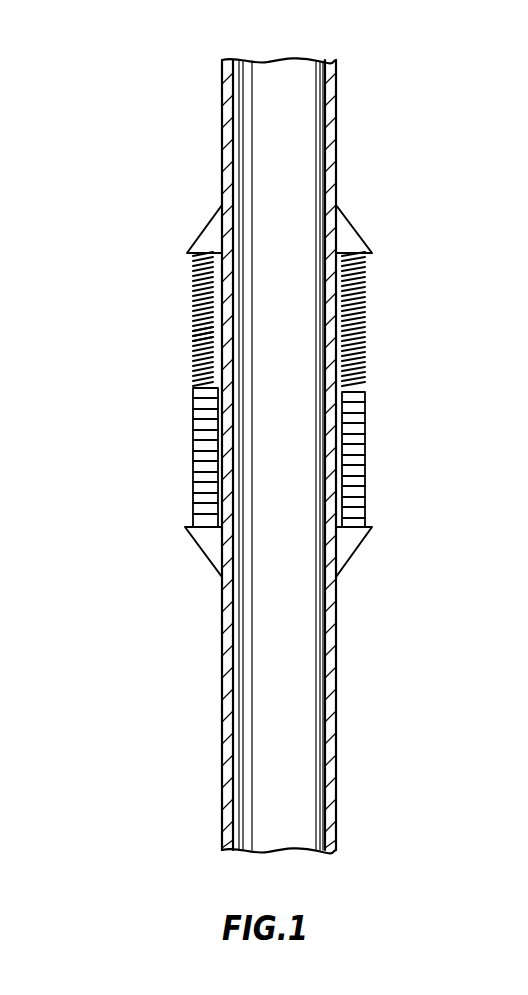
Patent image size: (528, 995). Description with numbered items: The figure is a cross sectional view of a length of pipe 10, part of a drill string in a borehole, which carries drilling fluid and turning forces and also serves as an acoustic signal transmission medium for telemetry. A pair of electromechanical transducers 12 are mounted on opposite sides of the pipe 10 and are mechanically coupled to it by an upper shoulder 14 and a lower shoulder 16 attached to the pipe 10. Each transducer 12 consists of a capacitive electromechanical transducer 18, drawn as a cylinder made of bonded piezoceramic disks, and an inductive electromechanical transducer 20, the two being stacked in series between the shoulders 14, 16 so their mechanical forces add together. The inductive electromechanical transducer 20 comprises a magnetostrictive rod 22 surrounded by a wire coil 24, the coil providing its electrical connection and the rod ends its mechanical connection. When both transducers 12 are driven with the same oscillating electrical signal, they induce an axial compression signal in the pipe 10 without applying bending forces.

The pipe 10 is at (337, 128).
The electromechanical transducer 12 is at (150, 385).
The upper shoulder 14 is at (203, 230).
The lower shoulder 16 is at (200, 548).
The capacitive electromechanical transducer 18 is at (193, 452).
The inductive electromechanical transducer 20 is at (393, 342).
The magnetostrictive rod 22 is at (190, 257).
The wire coil 24 is at (193, 328).